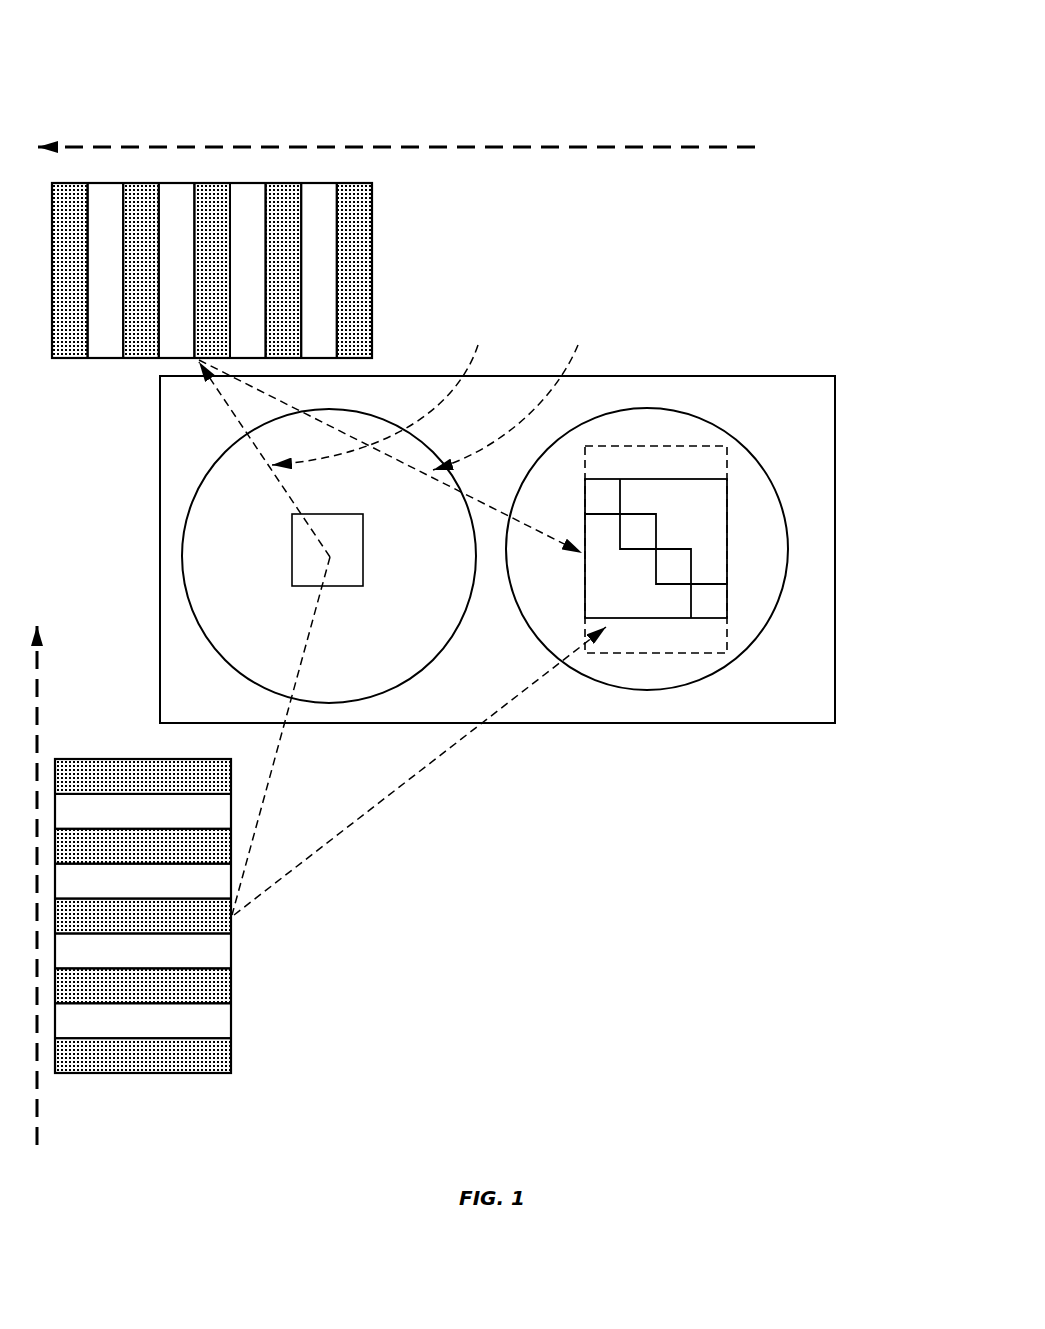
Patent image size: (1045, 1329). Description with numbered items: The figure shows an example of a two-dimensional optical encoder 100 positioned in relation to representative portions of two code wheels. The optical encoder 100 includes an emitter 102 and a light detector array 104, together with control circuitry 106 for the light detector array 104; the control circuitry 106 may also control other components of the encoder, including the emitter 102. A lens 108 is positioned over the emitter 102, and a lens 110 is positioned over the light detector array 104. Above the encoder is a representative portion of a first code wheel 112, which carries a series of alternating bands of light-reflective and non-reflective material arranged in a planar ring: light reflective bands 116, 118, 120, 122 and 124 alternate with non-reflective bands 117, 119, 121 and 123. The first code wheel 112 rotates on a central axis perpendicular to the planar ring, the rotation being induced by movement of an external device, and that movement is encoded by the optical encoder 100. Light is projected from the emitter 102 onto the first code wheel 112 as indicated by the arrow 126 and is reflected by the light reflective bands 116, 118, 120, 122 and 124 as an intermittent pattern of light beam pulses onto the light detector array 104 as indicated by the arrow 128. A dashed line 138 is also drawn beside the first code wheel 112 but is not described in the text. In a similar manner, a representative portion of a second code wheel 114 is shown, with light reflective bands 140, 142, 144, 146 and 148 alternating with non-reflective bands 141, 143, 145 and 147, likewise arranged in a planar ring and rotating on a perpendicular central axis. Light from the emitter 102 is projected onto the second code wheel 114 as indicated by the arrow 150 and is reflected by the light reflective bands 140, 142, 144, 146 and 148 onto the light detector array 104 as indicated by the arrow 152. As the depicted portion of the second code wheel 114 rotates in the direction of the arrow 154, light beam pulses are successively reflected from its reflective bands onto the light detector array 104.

The two-dimensional optical encoder 100 is at (783, 336).
The emitter 102 is at (289, 548).
The light detector array 104 is at (656, 548).
The control circuitry 106 is at (656, 549).
The lens 108 is at (194, 490).
The lens 110 is at (776, 628).
The first code wheel 112 is at (401, 272).
The second code wheel 114 is at (118, 1094).
The light reflective band 116 is at (68, 182).
The non-reflective band 117 is at (110, 182).
The light reflective band 118 is at (143, 182).
The non-reflective band 119 is at (172, 182).
The light reflective band 120 is at (213, 182).
The non-reflective band 121 is at (240, 182).
The light reflective band 122 is at (277, 182).
The non-reflective band 123 is at (312, 182).
The light reflective band 124 is at (359, 180).
The arrow 126 is at (386, 389).
The arrow 128 is at (517, 391).
The horizontal direction axis 138 is at (600, 165).
The light reflective band 140 is at (239, 776).
The non-reflective band 141 is at (239, 811).
The light reflective band 142 is at (239, 846).
The non-reflective band 143 is at (239, 881).
The light reflective band 144 is at (239, 916).
The non-reflective band 145 is at (239, 951).
The light reflective band 146 is at (239, 986).
The non-reflective band 147 is at (239, 1021).
The light reflective band 148 is at (239, 1056).
The arrow 150 is at (285, 759).
The arrow 152 is at (486, 744).
The arrow 154 is at (42, 670).